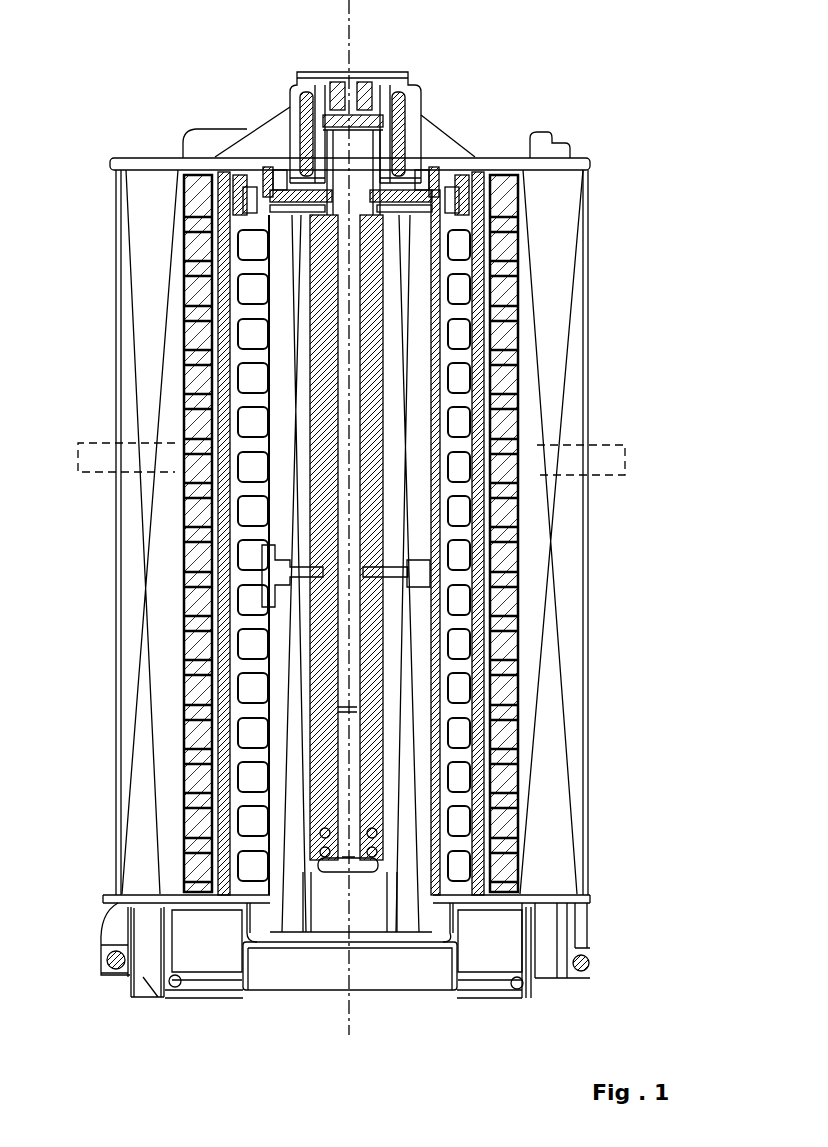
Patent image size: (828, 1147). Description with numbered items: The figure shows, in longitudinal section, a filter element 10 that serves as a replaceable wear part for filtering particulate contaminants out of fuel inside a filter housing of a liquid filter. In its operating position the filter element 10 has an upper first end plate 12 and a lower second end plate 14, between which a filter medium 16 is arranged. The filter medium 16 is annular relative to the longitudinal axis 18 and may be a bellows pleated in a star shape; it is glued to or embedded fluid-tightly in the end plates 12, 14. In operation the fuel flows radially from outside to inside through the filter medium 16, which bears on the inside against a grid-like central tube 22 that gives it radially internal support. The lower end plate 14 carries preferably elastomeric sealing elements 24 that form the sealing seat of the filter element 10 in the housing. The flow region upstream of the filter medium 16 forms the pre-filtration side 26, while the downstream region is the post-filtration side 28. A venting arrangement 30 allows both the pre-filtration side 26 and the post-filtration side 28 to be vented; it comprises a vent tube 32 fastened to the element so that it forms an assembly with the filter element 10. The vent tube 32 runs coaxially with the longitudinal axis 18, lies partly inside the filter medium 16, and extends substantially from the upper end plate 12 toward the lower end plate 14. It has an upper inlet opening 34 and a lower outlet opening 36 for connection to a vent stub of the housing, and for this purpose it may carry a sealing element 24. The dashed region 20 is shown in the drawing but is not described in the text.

The filter element 10 is at (583, 78).
The upper first end plate 12 is at (114, 158).
The lower second end plate 14 is at (112, 932).
The filter medium 16 is at (560, 250).
The longitudinal axis 18 is at (349, 15).
The inlet/outlet port 20 is at (597, 477).
The central tube 22 is at (503, 752).
The sealing element 24 is at (540, 978).
The pre-filtration side 26 is at (473, 123).
The post-filtration side 28 is at (387, 878).
The venting arrangement 30 is at (432, 100).
The vent tube 32 is at (320, 180).
The upper inlet opening 34 is at (377, 93).
The lower outlet opening 36 is at (343, 863).